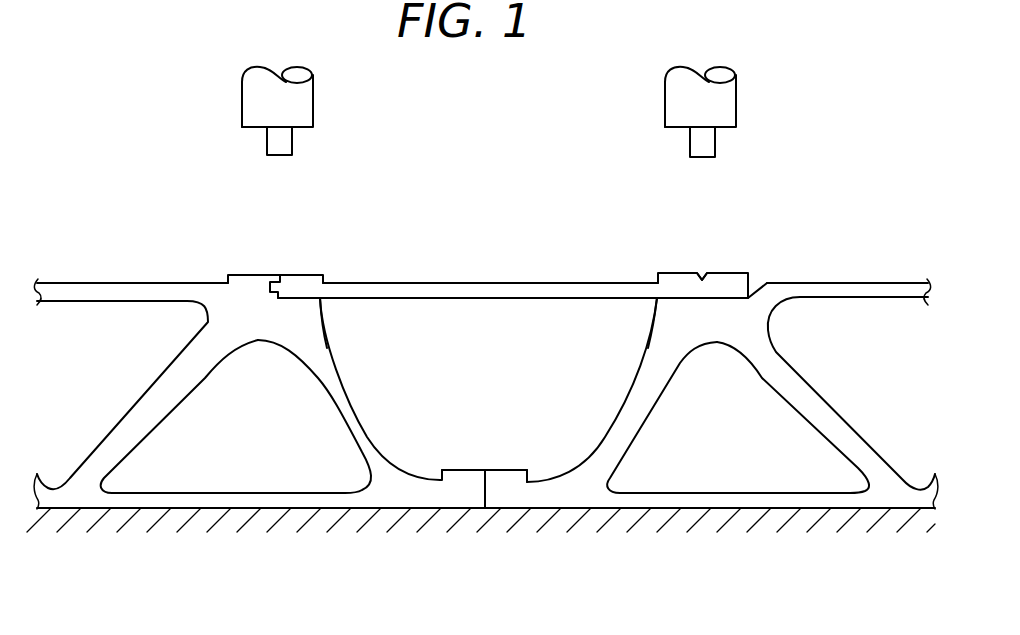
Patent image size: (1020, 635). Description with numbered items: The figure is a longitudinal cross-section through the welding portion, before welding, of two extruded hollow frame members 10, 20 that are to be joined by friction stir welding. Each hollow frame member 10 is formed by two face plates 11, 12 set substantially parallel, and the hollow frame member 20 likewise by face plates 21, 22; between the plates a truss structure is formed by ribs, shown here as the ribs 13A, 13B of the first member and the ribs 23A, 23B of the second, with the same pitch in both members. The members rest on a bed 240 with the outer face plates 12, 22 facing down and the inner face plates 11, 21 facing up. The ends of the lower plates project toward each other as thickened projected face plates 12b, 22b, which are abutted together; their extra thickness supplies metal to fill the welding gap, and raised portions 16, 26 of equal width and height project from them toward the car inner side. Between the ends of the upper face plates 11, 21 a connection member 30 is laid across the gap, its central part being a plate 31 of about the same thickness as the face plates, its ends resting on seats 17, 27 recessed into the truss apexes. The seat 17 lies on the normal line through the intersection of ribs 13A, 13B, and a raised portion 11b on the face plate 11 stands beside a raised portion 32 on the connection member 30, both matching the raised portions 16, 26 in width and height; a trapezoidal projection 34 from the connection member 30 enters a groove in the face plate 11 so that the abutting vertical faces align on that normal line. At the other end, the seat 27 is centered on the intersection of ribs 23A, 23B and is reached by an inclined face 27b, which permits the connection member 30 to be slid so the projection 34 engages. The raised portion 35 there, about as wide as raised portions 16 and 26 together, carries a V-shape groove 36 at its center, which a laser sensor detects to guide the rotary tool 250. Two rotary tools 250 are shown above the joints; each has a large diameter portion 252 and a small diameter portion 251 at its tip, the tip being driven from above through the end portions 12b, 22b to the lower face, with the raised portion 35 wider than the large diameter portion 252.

The hollow frame member 10 is at (481, 410).
The face plate 11 is at (122, 283).
The raised portion 11b is at (253, 273).
The face plate 12 is at (183, 500).
The projected face plate 12b is at (448, 488).
The rib 13A is at (349, 395).
The rib 13B is at (163, 397).
The raised portion 16 is at (460, 470).
The seat 17 is at (322, 328).
The hollow frame member 20 is at (711, 407).
The face plate 21 is at (852, 283).
The face plate 22 is at (770, 502).
The projected face plate 22b is at (519, 488).
The rib 23A is at (622, 395).
The rib 23B is at (820, 393).
The raised portion 26 is at (519, 470).
The seat 27 is at (663, 327).
The inclined face 27b is at (763, 283).
The connection member 30 is at (513, 239).
The plate 31 is at (537, 285).
The raised portion 32 is at (307, 273).
The trapezoidal projection 34 is at (267, 288).
The raised portion 35 is at (673, 270).
The V-shape groove 36 is at (700, 270).
The bed 240 is at (363, 515).
The rotary tool 250 is at (477, 112).
The small diameter portion 251 is at (290, 147).
The large diameter portion 252 is at (310, 100).